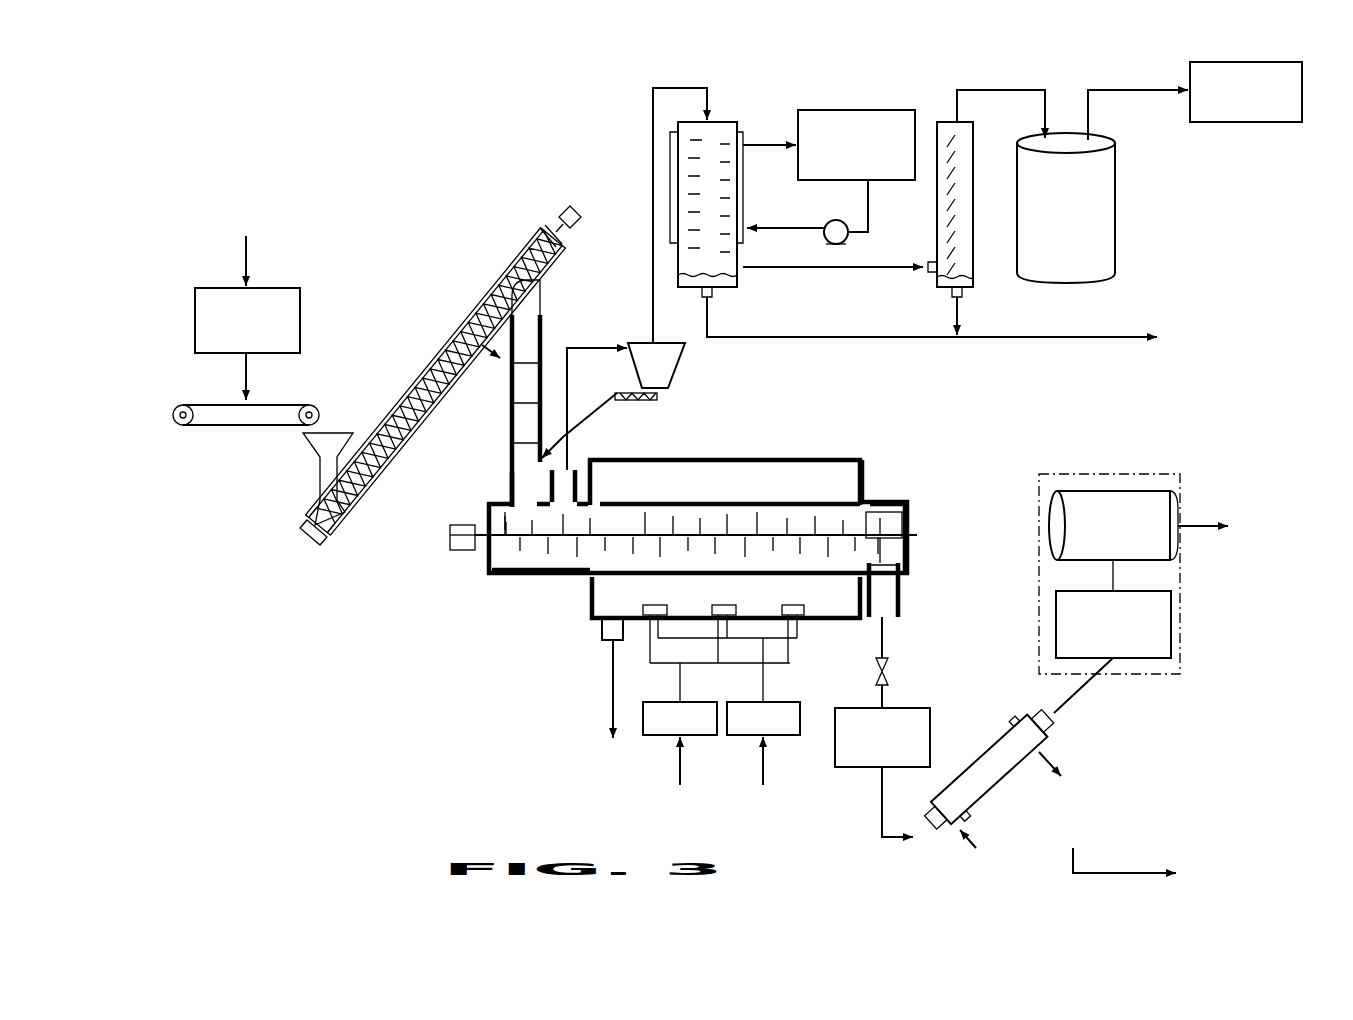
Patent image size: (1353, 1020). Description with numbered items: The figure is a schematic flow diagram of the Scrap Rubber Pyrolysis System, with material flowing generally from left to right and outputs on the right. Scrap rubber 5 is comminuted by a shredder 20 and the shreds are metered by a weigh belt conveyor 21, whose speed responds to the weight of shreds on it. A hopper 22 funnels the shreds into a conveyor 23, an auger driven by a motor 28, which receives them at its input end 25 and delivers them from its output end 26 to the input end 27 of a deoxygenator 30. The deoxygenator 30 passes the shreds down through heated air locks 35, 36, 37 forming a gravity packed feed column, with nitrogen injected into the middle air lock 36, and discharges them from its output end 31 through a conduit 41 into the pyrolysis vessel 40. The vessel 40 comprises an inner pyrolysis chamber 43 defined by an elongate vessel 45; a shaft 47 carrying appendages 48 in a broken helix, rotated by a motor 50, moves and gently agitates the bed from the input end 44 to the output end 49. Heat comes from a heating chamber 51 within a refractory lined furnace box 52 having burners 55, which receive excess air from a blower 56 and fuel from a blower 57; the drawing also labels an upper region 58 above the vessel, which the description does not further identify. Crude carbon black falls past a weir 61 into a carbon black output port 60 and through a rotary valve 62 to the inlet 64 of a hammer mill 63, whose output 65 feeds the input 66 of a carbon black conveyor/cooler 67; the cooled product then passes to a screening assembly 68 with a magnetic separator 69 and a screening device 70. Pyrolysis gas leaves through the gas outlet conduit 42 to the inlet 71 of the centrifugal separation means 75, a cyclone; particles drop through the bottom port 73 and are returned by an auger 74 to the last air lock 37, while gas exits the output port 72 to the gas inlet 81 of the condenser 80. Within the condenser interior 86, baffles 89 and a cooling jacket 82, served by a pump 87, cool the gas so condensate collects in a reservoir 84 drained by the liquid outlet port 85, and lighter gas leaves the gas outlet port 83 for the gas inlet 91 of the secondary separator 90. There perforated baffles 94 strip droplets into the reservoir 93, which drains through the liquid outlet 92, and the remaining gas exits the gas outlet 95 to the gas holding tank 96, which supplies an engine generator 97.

The scrap rubber 5 is at (247, 176).
The shredder 20 is at (300, 290).
The weigh belt conveyor 21 is at (218, 402).
The hopper 22 is at (333, 432).
The conveyor 23 is at (413, 366).
The input end 25 is at (318, 535).
The output end 26 is at (520, 262).
The input end 27 is at (540, 296).
The motor 28 is at (566, 207).
The deoxygenator 30 is at (483, 345).
The output end 31 is at (517, 500).
The air lock 35 is at (540, 335).
The middle air lock 36 is at (530, 384).
The last air lock 37 is at (530, 420).
The pyrolysis vessel 40 is at (838, 424).
The conduit 41 is at (500, 521).
The pyrolysis gas outlet conduit 42 is at (565, 468).
The inner pyrolysis chamber 43 is at (635, 527).
The input end 44 is at (470, 575).
The elongate vessel 45 is at (527, 578).
The shaft 47 is at (895, 530).
The appendages 48 is at (850, 515).
The output end 49 is at (918, 488).
The motor 50 is at (458, 552).
The heating chamber 51 is at (780, 602).
The furnace box 52 is at (693, 458).
The burners 55 is at (822, 592).
The blower 56 is at (740, 738).
The blower 57 is at (672, 700).
The upper chamber 58 is at (730, 490).
The carbon black output port 60 is at (900, 590).
The weir 61 is at (895, 548).
The rotary valve 62 is at (876, 665).
The hammer mill 63 is at (835, 740).
The inlet 64 is at (878, 700).
The output 65 is at (878, 780).
The input 66 is at (924, 838).
The carbon black conveyor/cooler 67 is at (1058, 737).
The carbon black screening assembly 68 is at (1090, 474).
The magnetic separator 69 is at (1150, 492).
The screening device 70 is at (1171, 598).
The inlet 71 is at (607, 347).
The output port 72 is at (655, 328).
The bottom port 73 is at (668, 395).
The auger 74 is at (630, 392).
The centrifugal separation means 75 is at (690, 384).
The condenser 80 is at (730, 108).
The gas inlet 81 is at (702, 120).
The cooling jacket 82 is at (672, 220).
The gas outlet port 83 is at (740, 270).
The reservoir 84 is at (735, 287).
The liquid outlet port 85 is at (710, 305).
The interior 86 is at (725, 168).
The pump 87 is at (826, 236).
The baffles 89 is at (686, 170).
The secondary separator 90 is at (940, 110).
The gas inlet 91 is at (933, 275).
The liquid outlet 92 is at (962, 305).
The reservoir 93 is at (975, 278).
The baffles 94 is at (965, 215).
The gas outlet 95 is at (975, 112).
The gas holding tank 96 is at (1127, 220).
The engine generator 97 is at (1235, 122).